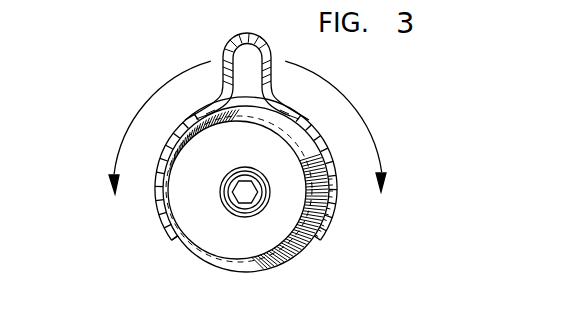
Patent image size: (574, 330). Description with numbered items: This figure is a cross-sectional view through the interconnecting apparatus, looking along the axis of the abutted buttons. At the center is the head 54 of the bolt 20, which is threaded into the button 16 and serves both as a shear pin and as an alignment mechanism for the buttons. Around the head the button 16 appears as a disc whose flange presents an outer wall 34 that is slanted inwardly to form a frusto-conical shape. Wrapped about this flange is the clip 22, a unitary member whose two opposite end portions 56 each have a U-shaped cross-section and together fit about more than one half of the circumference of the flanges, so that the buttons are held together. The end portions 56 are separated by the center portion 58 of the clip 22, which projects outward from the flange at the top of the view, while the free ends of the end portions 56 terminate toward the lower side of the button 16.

The first button 16 is at (277, 266).
The bolt 20 is at (221, 183).
The clip 22 is at (313, 135).
The outer wall 34 is at (222, 268).
The head 54 is at (237, 190).
The end portions 56 is at (157, 197).
The center portion 58 is at (228, 44).